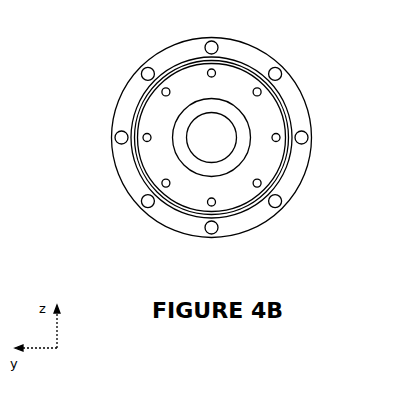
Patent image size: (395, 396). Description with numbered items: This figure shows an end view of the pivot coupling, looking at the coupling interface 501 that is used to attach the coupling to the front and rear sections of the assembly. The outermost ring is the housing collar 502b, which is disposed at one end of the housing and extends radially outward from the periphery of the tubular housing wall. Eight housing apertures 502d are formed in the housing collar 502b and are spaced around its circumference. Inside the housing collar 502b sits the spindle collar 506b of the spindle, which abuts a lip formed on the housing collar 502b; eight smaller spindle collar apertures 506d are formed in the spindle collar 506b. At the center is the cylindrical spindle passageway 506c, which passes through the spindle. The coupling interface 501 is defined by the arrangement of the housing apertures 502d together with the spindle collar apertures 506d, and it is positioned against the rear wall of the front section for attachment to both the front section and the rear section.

The coupling interface 501 is at (84, 29).
The housing collar 502b is at (130, 97).
The housing apertures 502d is at (144, 207).
The spindle collar 506b is at (187, 78).
The cylindrical spindle passageway 506c is at (207, 144).
The spindle collar apertures 506d is at (284, 70).